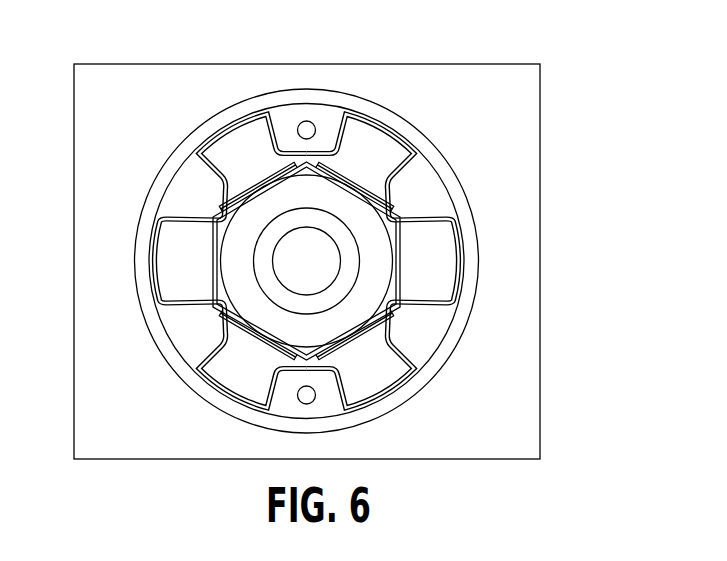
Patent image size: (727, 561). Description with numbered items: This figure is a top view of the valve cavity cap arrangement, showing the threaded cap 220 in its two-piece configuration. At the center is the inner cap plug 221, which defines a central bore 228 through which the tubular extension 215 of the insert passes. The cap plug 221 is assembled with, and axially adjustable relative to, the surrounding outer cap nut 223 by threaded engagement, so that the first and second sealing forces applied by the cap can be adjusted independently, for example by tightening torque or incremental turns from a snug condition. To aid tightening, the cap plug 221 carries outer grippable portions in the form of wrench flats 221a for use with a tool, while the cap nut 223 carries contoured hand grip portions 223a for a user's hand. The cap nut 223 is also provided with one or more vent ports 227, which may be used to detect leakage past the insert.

The threaded cap 220 is at (412, 115).
The inner cap plug 221 is at (378, 296).
The wrench flats 221a is at (266, 352).
The outer cap nut 223 is at (243, 143).
The contoured hand grip portions 223a is at (180, 200).
The vent ports 227 is at (304, 132).
The central bore 228 is at (345, 232).
The tubular extension 215 is at (352, 272).